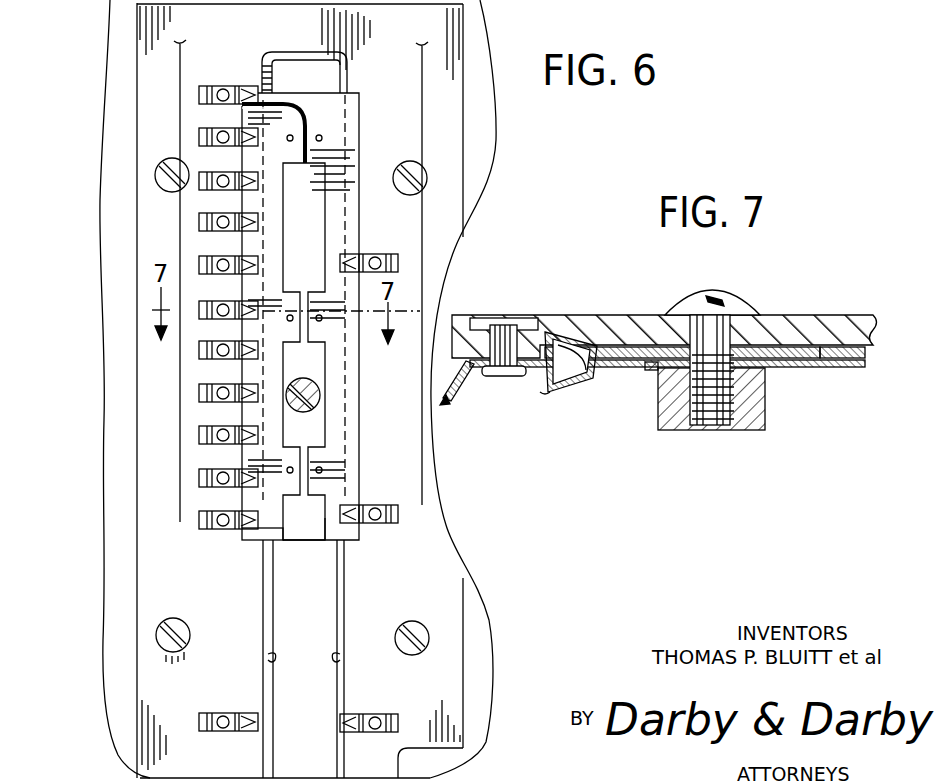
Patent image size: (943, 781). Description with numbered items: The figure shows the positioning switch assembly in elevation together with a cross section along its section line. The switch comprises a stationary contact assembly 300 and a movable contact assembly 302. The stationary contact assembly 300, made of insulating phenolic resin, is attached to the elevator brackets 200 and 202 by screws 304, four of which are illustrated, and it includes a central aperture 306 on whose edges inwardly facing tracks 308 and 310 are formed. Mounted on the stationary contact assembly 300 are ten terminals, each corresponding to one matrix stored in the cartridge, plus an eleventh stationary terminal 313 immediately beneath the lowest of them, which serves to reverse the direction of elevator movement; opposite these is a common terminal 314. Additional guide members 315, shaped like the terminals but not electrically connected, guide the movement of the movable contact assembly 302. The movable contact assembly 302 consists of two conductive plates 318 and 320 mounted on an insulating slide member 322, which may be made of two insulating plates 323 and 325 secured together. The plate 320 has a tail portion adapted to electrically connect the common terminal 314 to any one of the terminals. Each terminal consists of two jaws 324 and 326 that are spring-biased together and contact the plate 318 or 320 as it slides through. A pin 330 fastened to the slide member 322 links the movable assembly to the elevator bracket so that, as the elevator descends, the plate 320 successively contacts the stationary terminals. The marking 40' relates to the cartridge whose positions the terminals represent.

In FIG. 6, the elevator bracket 200 is at (478, 658).
In FIG. 6, the elevator bracket 202 is at (113, 607).
In FIG. 6, the stationary contact assembly 300 is at (445, 193).
In FIG. 7, the stationary contact assembly 300 is at (465, 313).
In FIG. 6, the movable contact assembly 302 is at (366, 99).
In FIG. 7, the movable contact assembly 302 is at (620, 368).
In FIG. 6, the screws 304 is at (160, 183).
In FIG. 6, the central aperture 306 is at (314, 607).
In FIG. 6, the track 308 is at (268, 658).
In FIG. 7, the track 308 is at (608, 365).
In FIG. 6, the track 310 is at (340, 658).
In FIG. 7, the track 310 is at (825, 365).
In FIG. 6, the eleventh stationary terminal 313 is at (201, 529).
In FIG. 6, the common terminal 314 is at (360, 521).
In FIG. 6, the guide members 315 is at (350, 262).
In FIG. 6, the conductive plate 318 is at (275, 428).
In FIG. 6, the conductive plate 320 is at (257, 88).
In FIG. 6, the slide member 322 is at (303, 171).
In FIG. 7, the slide member 322 is at (764, 313).
In FIG. 6, the insulating plate 323 is at (312, 221).
In FIG. 7, the insulating plate 323 is at (750, 385).
In FIG. 7, the jaw 324 is at (547, 384).
In FIG. 7, the insulating plate 325 is at (641, 313).
In FIG. 7, the jaw 326 is at (555, 330).
In FIG. 6, the pin 330 is at (322, 382).
In FIG. 7, the pin 330 is at (672, 420).
In FIG. 6, the housing 40' is at (53, 6).